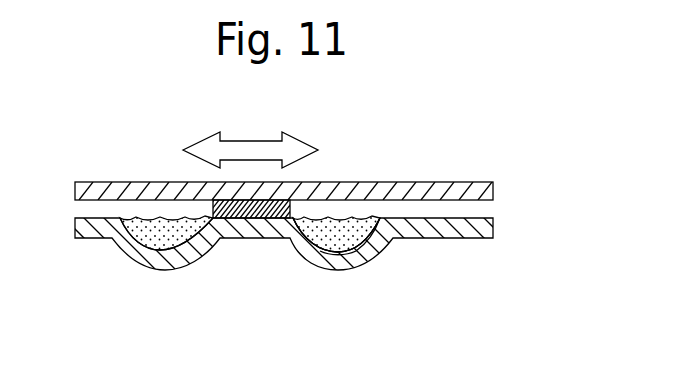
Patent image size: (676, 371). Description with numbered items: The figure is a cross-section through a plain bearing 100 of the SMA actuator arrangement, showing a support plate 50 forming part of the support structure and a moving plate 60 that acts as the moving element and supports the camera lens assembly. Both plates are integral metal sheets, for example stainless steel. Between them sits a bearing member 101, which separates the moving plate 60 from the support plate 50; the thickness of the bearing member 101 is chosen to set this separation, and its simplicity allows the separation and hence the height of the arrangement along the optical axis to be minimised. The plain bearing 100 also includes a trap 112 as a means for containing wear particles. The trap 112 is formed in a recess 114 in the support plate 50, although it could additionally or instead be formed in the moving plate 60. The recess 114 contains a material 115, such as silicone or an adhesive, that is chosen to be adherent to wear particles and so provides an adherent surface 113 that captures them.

The support plate 50 is at (467, 227).
The moving plate 60 is at (467, 187).
The plain bearing 100 is at (212, 209).
The bearing member 101 is at (245, 207).
The trap 112 is at (317, 241).
The adherent surface 113 is at (348, 222).
The recess 114 is at (335, 252).
The material 115 is at (363, 262).